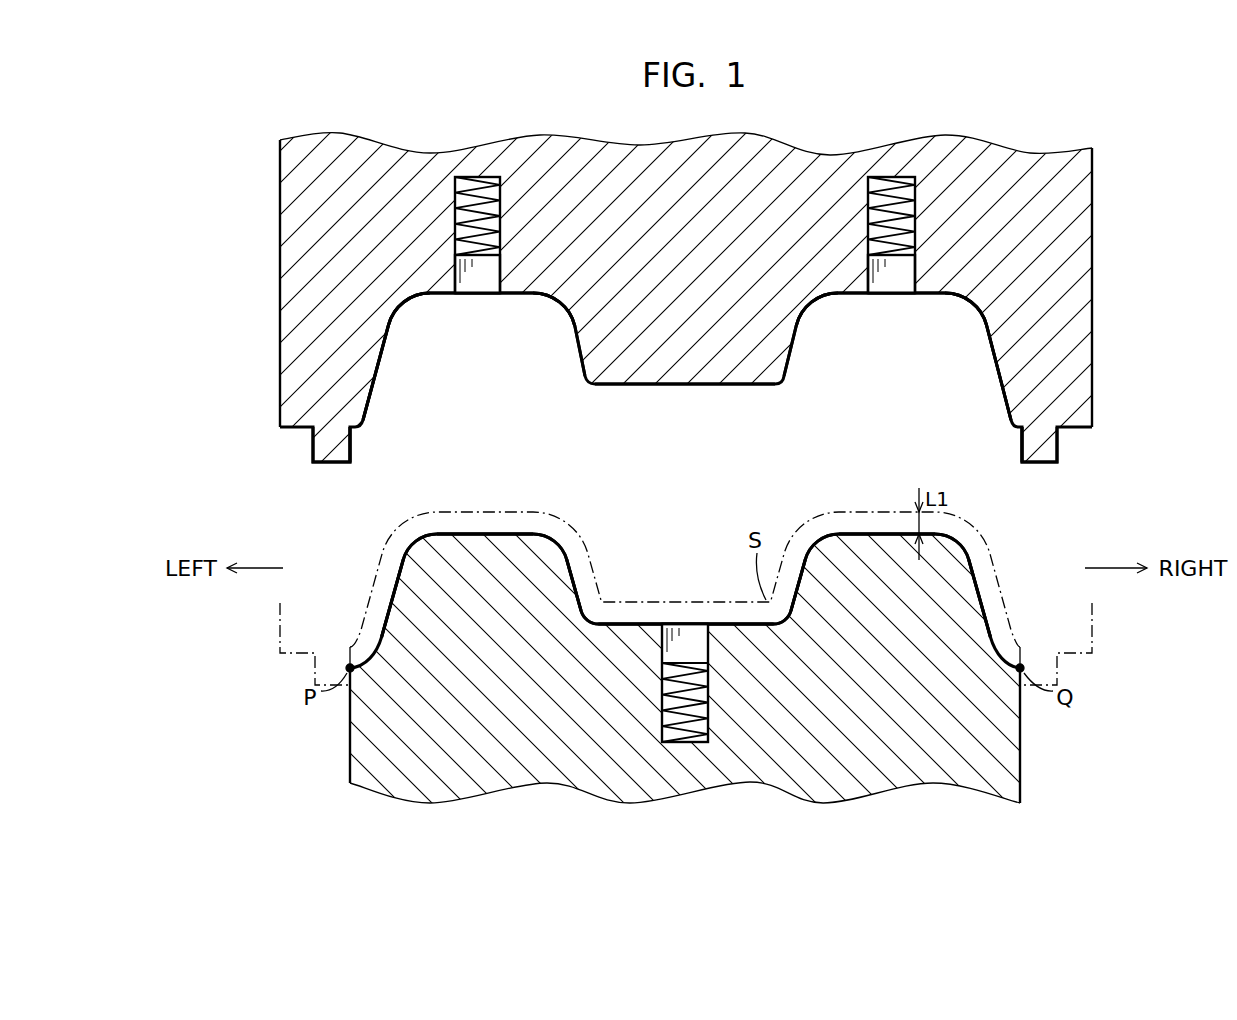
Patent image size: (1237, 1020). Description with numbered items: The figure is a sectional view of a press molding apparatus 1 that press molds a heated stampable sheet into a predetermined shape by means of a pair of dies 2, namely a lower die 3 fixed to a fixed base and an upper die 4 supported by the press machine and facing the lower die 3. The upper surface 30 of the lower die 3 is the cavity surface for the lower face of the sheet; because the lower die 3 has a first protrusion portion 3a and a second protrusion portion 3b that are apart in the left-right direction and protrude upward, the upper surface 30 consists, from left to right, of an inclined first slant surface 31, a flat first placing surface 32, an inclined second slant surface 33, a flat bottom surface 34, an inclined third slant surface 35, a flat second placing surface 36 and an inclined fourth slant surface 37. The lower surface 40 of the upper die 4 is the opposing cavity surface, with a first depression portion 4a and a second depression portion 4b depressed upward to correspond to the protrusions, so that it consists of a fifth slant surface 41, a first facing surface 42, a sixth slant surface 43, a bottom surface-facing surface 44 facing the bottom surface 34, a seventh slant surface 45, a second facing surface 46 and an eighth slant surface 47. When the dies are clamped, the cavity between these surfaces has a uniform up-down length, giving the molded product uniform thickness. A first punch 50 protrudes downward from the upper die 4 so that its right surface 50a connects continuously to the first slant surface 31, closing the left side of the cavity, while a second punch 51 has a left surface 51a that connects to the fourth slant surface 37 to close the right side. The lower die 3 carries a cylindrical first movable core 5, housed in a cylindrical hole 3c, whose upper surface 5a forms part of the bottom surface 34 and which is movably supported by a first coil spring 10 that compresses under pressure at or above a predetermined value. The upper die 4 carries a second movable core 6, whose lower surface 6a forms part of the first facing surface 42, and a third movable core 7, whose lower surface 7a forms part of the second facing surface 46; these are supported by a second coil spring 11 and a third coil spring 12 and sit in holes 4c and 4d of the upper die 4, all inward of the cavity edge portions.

The press molding apparatus 1 is at (1130, 471).
The pair of dies 2 is at (618, 470).
The lower die 3 is at (826, 737).
The first protrusion portion 3a is at (536, 533).
The second protrusion portion 3b is at (862, 533).
The cylindrical hole 3c is at (660, 622).
The upper die 4 is at (661, 212).
The first depression portion 4a is at (506, 388).
The second depression portion 4b is at (860, 388).
The first pin hole of upper die 4c is at (502, 296).
The second pin hole of upper die 4d is at (871, 296).
The first movable core 5 is at (709, 648).
The upper surface of the first movable core 5a is at (690, 621).
The second movable core 6 is at (500, 281).
The lower surface of the second movable core 6a is at (477, 296).
The third movable core 7 is at (916, 283).
The lower surface of the third movable core 7a is at (890, 296).
The first coil spring 10 is at (709, 716).
The second coil spring 11 is at (497, 212).
The third coil spring 12 is at (912, 216).
The upper surface of the lower die 30 is at (685, 601).
The first slant surface 31 is at (398, 592).
The first placing surface 32 is at (472, 525).
The second slant surface 33 is at (578, 572).
The bottom surface 34 is at (624, 616).
The third slant surface 35 is at (806, 580).
The second placing surface 36 is at (882, 525).
The fourth slant surface 37 is at (984, 574).
The lower surface of the upper die 40 is at (686, 377).
The fifth slant surface 41 is at (377, 386).
The first facing surface 42 is at (432, 306).
The sixth slant surface 43 is at (580, 338).
The bottom surface-facing surface 44 is at (672, 384).
The seventh slant surface 45 is at (794, 338).
The second facing surface 46 is at (846, 306).
The eighth slant surface 47 is at (980, 340).
The first punch 50 is at (333, 464).
The right surface of the first punch 50a is at (353, 446).
The second punch 51 is at (1041, 464).
The left surface of the second punch 51a is at (1020, 446).